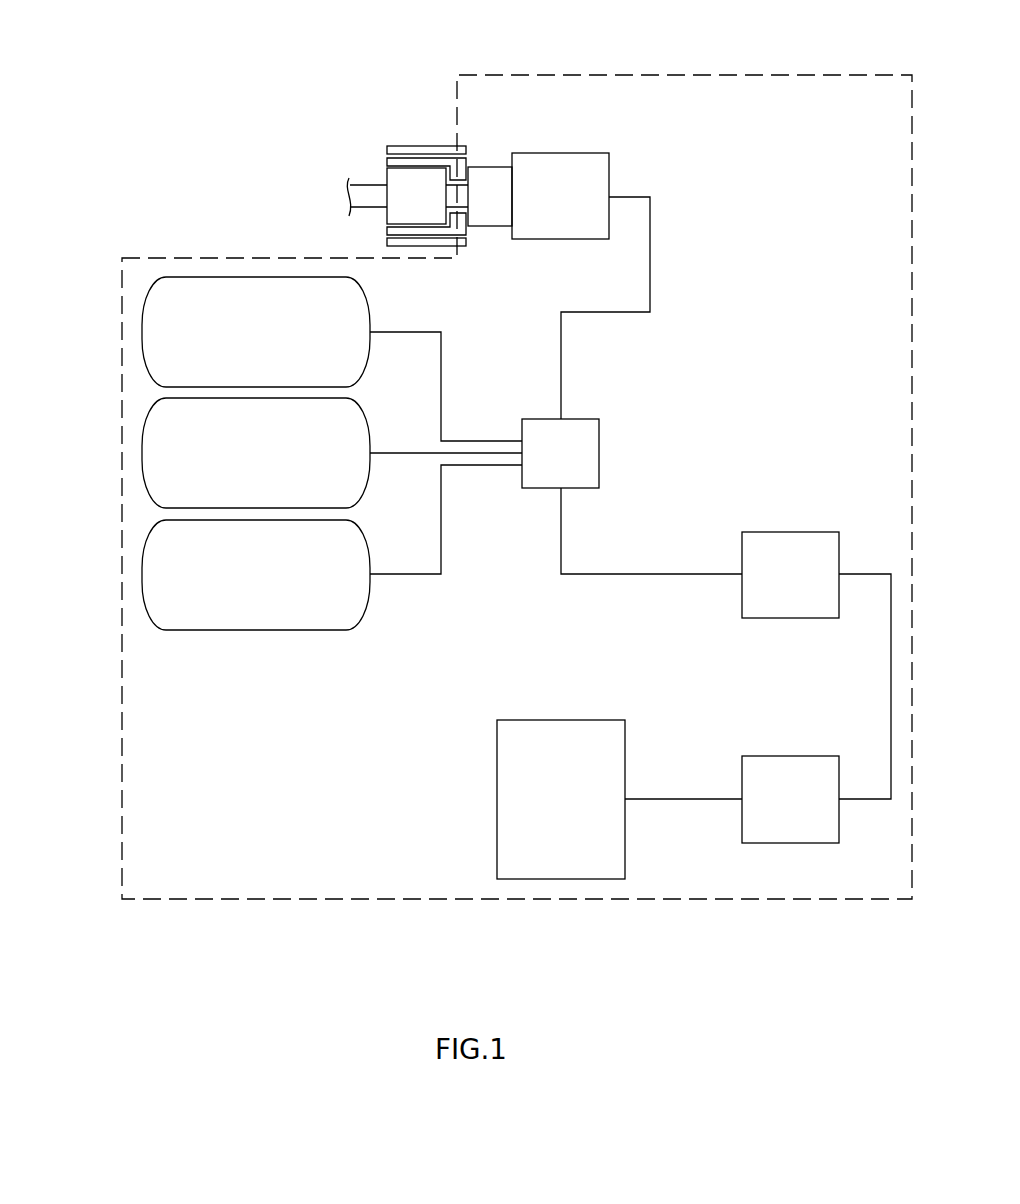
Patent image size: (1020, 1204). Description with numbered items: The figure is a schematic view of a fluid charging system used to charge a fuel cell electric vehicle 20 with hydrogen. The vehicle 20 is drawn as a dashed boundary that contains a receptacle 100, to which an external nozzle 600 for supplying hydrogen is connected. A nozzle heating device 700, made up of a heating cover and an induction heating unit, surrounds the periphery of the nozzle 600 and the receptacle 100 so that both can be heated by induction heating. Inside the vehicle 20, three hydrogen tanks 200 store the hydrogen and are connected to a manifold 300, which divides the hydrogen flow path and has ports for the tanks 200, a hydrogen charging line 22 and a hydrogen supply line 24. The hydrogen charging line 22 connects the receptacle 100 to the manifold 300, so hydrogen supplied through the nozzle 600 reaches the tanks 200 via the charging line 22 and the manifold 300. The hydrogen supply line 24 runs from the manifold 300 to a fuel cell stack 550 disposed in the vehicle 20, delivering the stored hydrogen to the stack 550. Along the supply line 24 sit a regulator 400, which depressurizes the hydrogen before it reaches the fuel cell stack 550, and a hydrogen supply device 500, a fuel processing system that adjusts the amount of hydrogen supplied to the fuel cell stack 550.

The fuel cell electric vehicle 20 is at (781, 74).
The hydrogen charging line 22 is at (650, 249).
The hydrogen supply line 24 is at (650, 575).
The receptacle 100 is at (558, 153).
The hydrogen tanks 200 is at (142, 333).
The manifold 300 is at (522, 418).
The regulator 400 is at (790, 532).
The hydrogen supply device 500 is at (790, 756).
The fuel cell stack 550 is at (560, 720).
The nozzle 600 is at (365, 158).
The nozzle heating device 700 is at (418, 130).